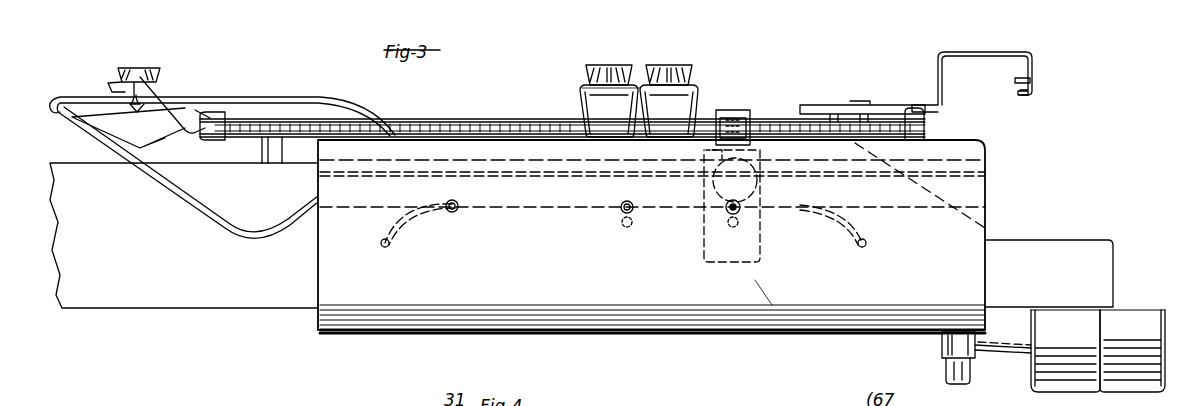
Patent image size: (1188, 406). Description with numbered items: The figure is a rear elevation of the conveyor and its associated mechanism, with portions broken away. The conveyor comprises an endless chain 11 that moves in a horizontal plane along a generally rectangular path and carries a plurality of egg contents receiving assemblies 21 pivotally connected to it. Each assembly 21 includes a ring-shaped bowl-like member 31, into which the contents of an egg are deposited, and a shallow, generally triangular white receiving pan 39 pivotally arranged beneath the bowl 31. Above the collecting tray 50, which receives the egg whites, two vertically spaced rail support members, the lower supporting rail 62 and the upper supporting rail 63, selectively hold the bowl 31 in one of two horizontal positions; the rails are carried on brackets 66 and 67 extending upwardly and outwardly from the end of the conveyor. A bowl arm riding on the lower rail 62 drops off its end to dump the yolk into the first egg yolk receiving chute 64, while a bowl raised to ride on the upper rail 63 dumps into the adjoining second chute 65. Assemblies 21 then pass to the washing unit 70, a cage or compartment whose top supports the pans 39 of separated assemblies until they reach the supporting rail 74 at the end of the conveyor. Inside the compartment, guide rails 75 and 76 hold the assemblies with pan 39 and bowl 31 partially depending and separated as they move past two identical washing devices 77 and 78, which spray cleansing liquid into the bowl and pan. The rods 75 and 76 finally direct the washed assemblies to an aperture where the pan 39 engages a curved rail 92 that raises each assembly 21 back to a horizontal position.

The endless chain 11 is at (468, 125).
The egg contents receiving assembly 21 is at (765, 237).
The bowl-like member 31 is at (145, 68).
The white receiving pan 39 is at (158, 136).
The tray 50 is at (1100, 224).
The lower supporting rail 62 is at (1018, 93).
The upper supporting rail 63 is at (1015, 80).
The egg yolk receiving chute 64 is at (1145, 317).
The egg yolk receiving chute 65 is at (1072, 317).
The bracket 66 is at (986, 369).
The bracket 67 is at (975, 56).
The washing unit 70 is at (388, 322).
The supporting rail 74 is at (243, 98).
The guide rail 75 is at (852, 178).
The guide rail 76 is at (508, 212).
The washing device 77 is at (752, 207).
The washing device 78 is at (622, 198).
The curved rail 92 is at (208, 220).